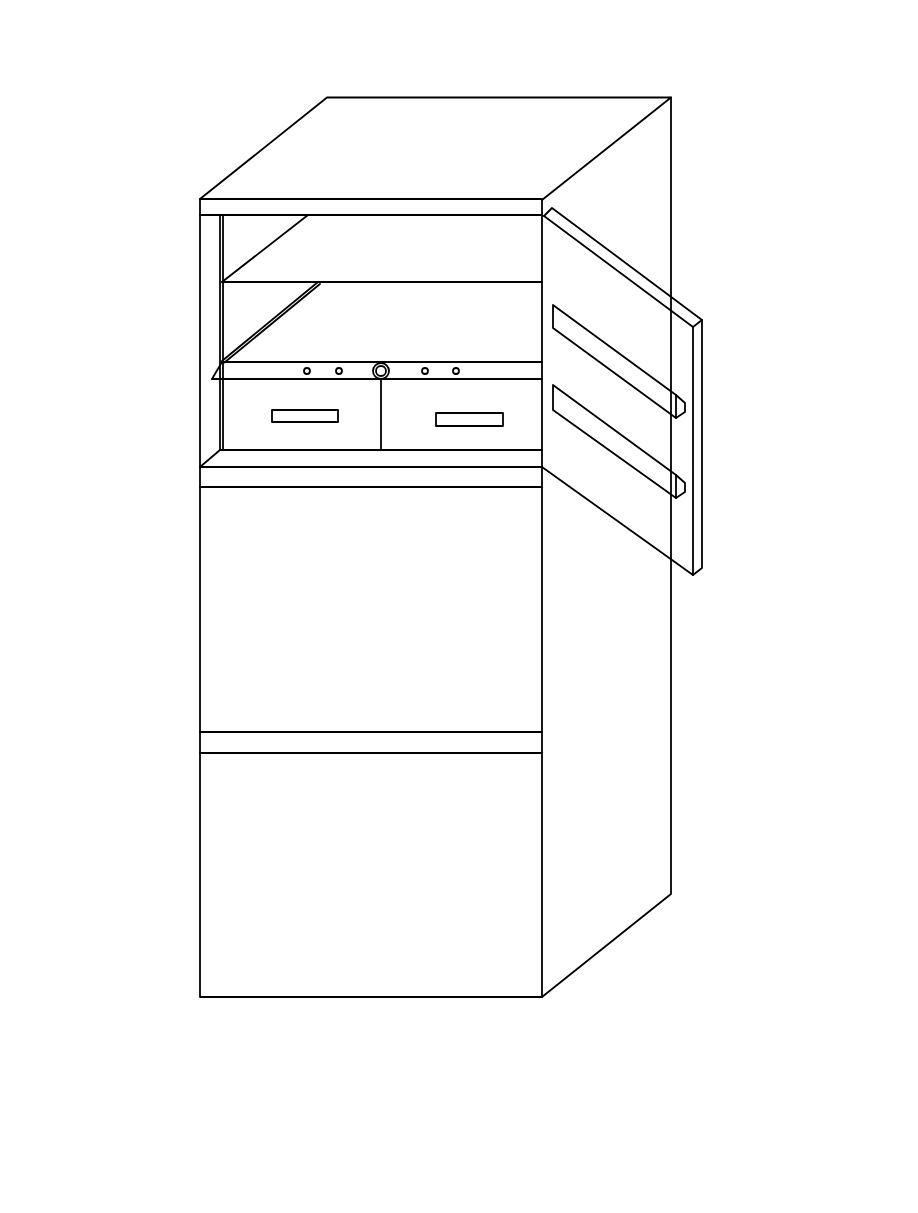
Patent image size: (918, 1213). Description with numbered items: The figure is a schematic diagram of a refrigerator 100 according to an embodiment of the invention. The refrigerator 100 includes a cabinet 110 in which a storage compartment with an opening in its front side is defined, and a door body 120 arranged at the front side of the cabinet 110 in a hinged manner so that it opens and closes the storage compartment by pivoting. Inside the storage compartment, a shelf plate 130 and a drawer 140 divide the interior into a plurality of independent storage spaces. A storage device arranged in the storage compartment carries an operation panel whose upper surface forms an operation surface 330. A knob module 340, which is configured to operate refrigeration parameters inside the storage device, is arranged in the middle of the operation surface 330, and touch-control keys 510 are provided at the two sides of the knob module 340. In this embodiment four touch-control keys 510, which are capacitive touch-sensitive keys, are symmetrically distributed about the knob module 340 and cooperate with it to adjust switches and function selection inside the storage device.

The refrigerator 100 is at (268, 56).
The cabinet 110 is at (676, 93).
The door body 120 is at (654, 343).
The shelf plate 130 is at (323, 249).
The drawer 140 is at (245, 428).
The operation surface 330 is at (233, 376).
The knob module 340 is at (304, 368).
The touch-control keys 510 is at (373, 365).